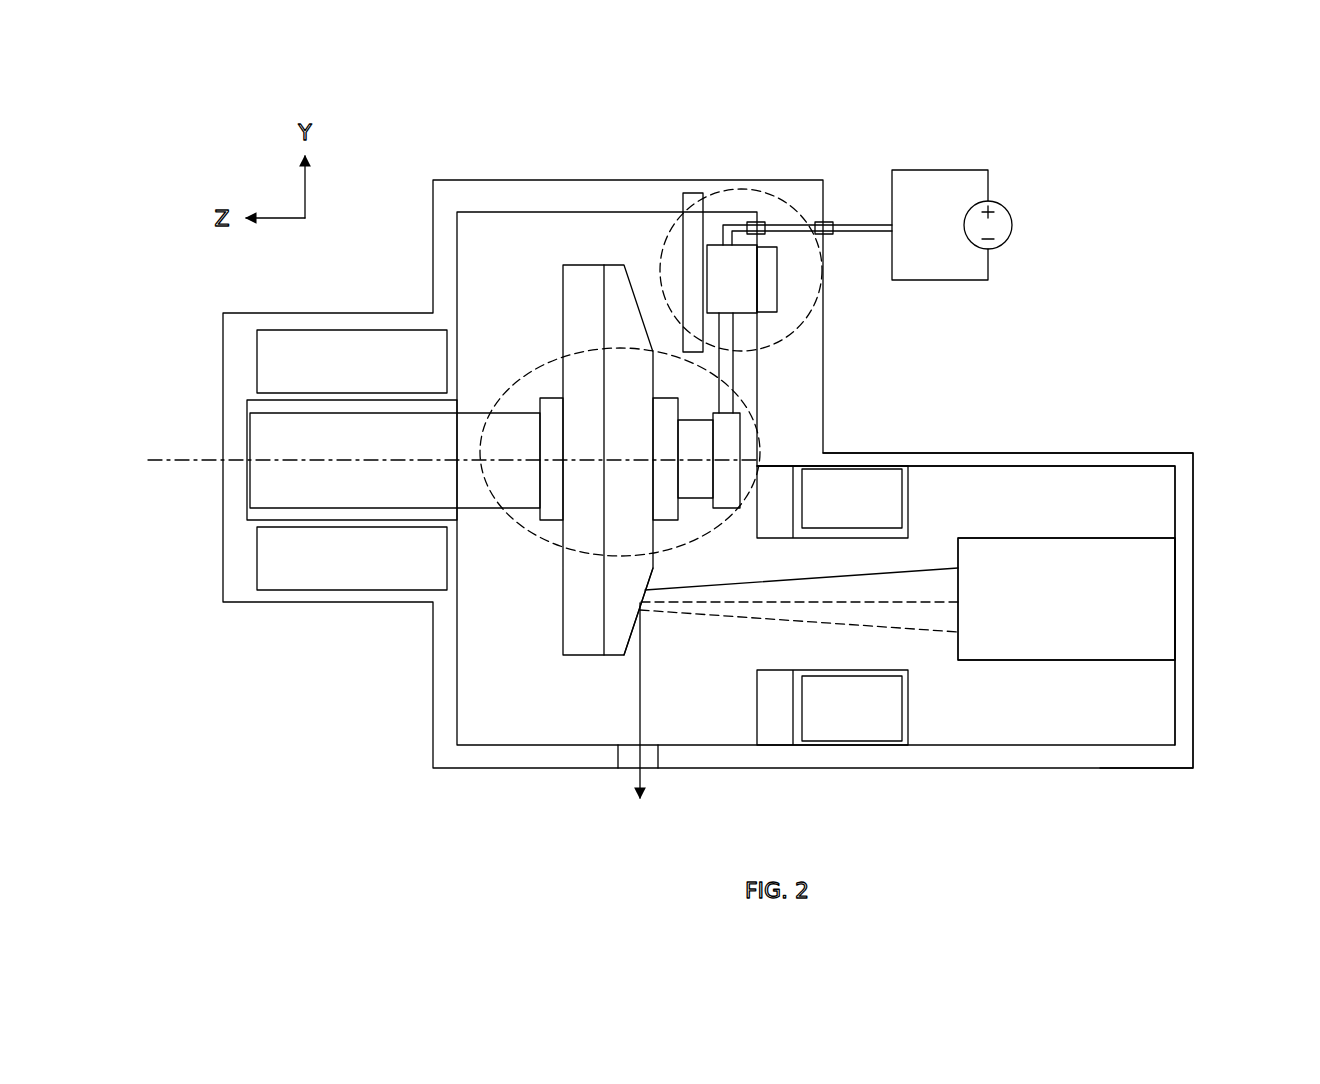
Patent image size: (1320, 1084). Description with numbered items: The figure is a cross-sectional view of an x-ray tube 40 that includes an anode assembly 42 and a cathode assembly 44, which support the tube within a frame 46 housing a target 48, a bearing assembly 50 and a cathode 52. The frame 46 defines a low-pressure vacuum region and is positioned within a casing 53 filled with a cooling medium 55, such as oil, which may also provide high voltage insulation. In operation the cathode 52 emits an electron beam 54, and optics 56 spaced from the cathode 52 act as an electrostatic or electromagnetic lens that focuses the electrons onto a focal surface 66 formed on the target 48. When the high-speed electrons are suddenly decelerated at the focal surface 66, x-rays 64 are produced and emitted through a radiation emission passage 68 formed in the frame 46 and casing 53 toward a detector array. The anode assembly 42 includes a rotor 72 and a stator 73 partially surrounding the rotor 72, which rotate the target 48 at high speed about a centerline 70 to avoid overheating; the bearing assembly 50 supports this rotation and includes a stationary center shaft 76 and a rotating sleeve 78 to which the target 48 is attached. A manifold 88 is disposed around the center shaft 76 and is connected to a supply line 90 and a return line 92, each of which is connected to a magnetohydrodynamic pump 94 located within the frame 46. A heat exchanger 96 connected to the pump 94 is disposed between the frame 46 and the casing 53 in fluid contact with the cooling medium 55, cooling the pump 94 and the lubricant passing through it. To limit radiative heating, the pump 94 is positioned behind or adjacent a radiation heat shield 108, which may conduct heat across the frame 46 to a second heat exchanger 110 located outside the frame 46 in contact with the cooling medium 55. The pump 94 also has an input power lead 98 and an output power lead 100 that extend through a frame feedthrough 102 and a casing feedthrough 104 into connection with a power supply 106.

The x-ray tube 40 is at (413, 696).
The anode assembly 42 is at (633, 277).
The cathode assembly 44 is at (1077, 672).
The frame 46 is at (975, 747).
The target 48 is at (622, 607).
The bearing assembly 50 is at (528, 542).
The cathode 52 is at (1162, 600).
The casing 53 is at (1110, 452).
The electron beam 54 is at (697, 630).
The cooling medium 55 is at (1016, 465).
The optics 56 is at (850, 724).
The x-rays 64 is at (637, 777).
The focal surface 66 is at (638, 317).
The radiation emission passage 68 is at (615, 755).
The centerline 70 is at (174, 462).
The rotor 72 is at (273, 437).
The stator 73 is at (351, 343).
The center shaft 76 is at (697, 445).
The sleeve 78 is at (553, 413).
The manifold 88 is at (728, 440).
The supply line 90 is at (735, 400).
The return line 92 is at (730, 365).
The magnetohydrodynamic pump 94 is at (722, 350).
The heat exchanger 96 is at (770, 287).
The input power lead 98 is at (866, 233).
The output power lead 100 is at (868, 226).
The frame feedthrough 102 is at (758, 220).
The casing feedthrough 104 is at (835, 220).
The power supply 106 is at (1005, 194).
The radiation heat shield 108 is at (677, 252).
The heat exchanger 110 is at (687, 217).